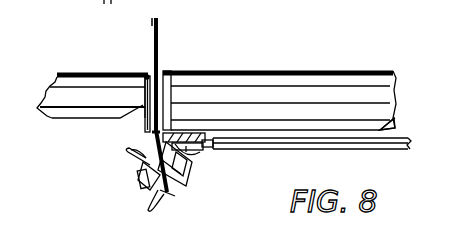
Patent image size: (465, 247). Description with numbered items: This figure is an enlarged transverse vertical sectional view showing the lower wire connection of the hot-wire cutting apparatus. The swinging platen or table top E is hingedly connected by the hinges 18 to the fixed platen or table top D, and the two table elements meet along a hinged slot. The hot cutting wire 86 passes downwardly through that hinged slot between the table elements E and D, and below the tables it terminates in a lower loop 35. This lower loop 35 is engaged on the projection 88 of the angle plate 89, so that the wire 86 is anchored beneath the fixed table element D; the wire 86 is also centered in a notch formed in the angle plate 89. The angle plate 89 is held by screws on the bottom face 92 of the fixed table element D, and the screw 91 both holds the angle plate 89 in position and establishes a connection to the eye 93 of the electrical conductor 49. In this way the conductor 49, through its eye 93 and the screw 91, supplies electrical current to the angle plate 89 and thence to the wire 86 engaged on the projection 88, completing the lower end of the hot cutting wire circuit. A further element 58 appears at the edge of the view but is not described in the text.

The swinging platen or table top E is at (67, 85).
The fixed platen or table top D is at (308, 87).
The hinges 18 is at (147, 77).
The lower looped end 35 is at (170, 204).
The electrical conductor 49 is at (300, 146).
The member 58 is at (464, 136).
The hot cutting wire 86 is at (146, 116).
The projection 88 is at (140, 184).
The angle plate 89 is at (173, 188).
The screw 91 is at (201, 152).
The bottom face 92 is at (394, 108).
The eye 93 is at (214, 148).